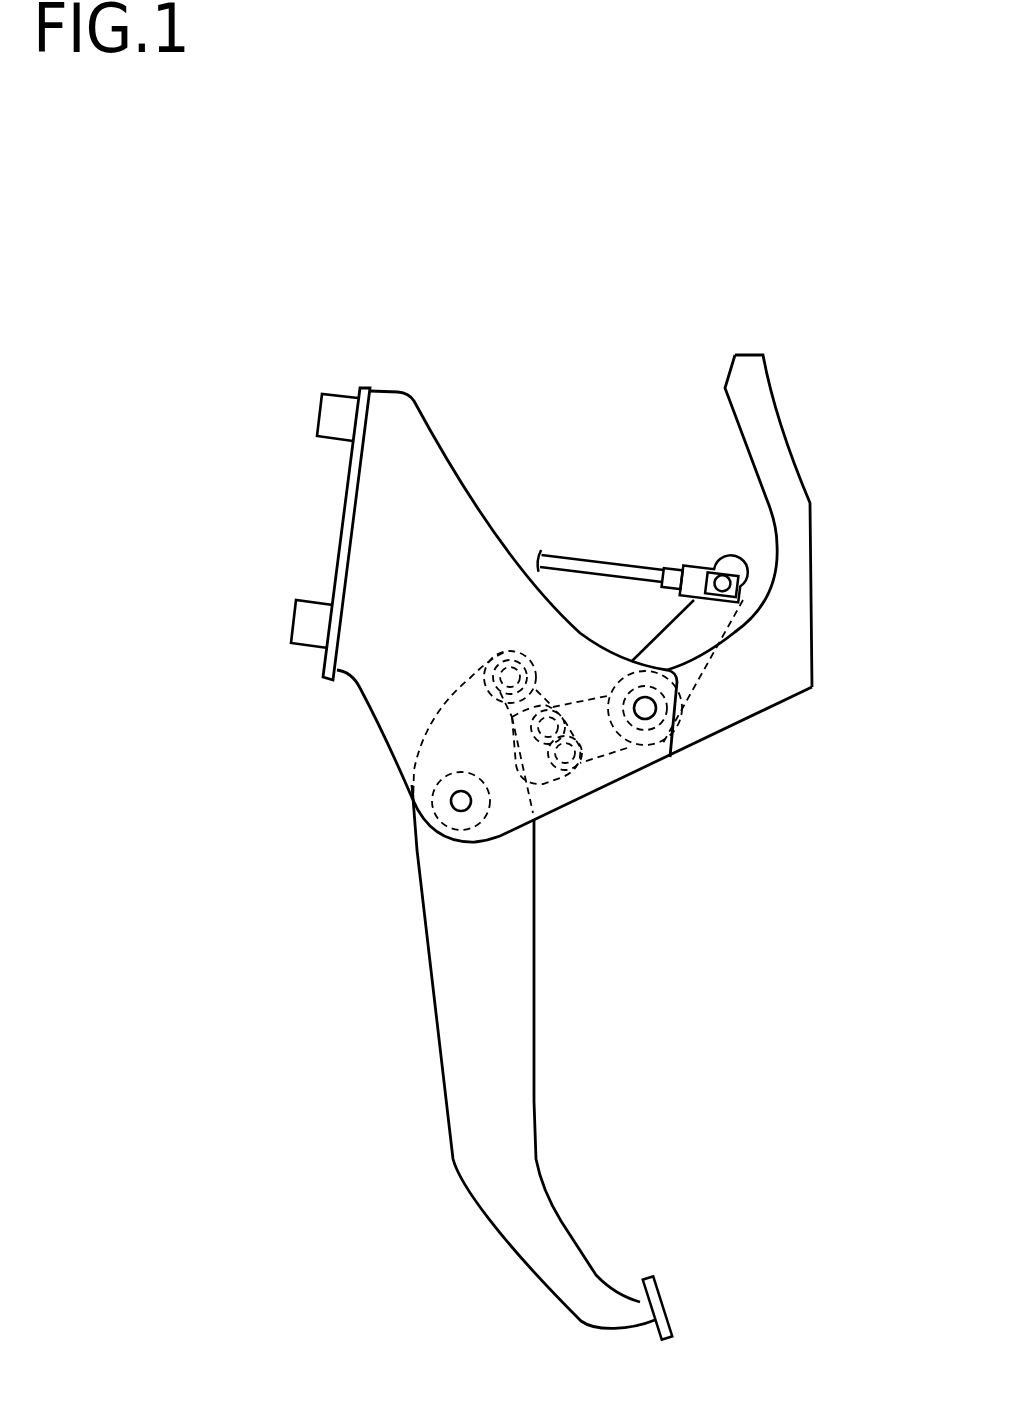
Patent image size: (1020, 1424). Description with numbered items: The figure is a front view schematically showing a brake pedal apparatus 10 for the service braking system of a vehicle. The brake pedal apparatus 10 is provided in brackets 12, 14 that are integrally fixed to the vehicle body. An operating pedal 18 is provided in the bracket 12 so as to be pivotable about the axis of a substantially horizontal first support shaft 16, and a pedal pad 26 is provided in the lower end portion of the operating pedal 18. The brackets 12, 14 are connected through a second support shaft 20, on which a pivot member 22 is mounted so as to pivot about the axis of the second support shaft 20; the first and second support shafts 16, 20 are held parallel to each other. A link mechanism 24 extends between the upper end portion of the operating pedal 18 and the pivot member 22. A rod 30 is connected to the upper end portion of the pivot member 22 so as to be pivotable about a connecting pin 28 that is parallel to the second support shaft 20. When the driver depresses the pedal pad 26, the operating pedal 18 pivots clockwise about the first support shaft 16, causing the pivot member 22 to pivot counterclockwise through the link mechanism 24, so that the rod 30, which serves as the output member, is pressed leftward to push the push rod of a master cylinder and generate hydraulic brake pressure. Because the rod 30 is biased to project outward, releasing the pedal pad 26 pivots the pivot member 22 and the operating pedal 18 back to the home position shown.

The brake pedal apparatus 10 is at (318, 1234).
The bracket 12 is at (412, 425).
The bracket 14 is at (793, 535).
The first support shaft 16 is at (460, 800).
The operating pedal 18 is at (509, 1008).
The second support shaft 20 is at (645, 712).
The pivot member 22 is at (693, 633).
The link mechanism 24 is at (538, 679).
The pedal pad 26 is at (662, 1310).
The connecting pin 28 is at (725, 570).
The rod 30 is at (626, 568).